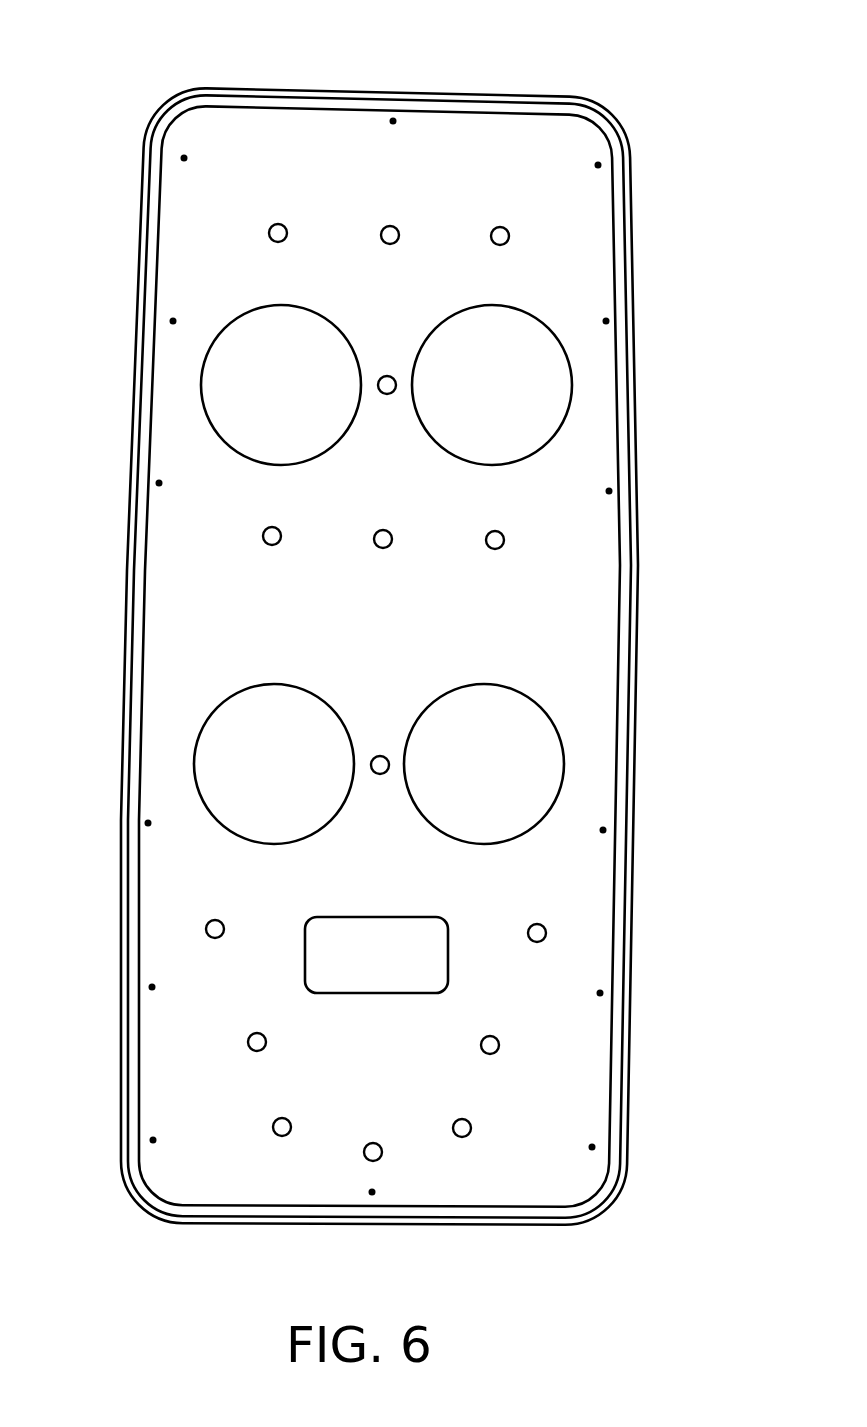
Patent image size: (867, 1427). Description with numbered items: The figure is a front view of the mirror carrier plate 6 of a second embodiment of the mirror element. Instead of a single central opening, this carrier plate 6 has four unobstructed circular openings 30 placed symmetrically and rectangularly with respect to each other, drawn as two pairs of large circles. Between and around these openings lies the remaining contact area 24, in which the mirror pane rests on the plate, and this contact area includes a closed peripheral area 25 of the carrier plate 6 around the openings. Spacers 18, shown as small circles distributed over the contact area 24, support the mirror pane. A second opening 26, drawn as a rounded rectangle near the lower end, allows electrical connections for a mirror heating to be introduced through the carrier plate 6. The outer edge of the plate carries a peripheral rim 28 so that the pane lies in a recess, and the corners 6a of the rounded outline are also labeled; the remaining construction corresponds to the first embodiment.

The mirror carrier plate 6 is at (642, 123).
The housing corners 6a is at (187, 119).
The spacers 18 is at (287, 231).
The contact area 24 is at (510, 633).
The peripheral area 25 is at (580, 277).
The second opening 26 is at (345, 978).
The peripheral rim 28 is at (625, 1097).
The circular openings 30 is at (243, 405).